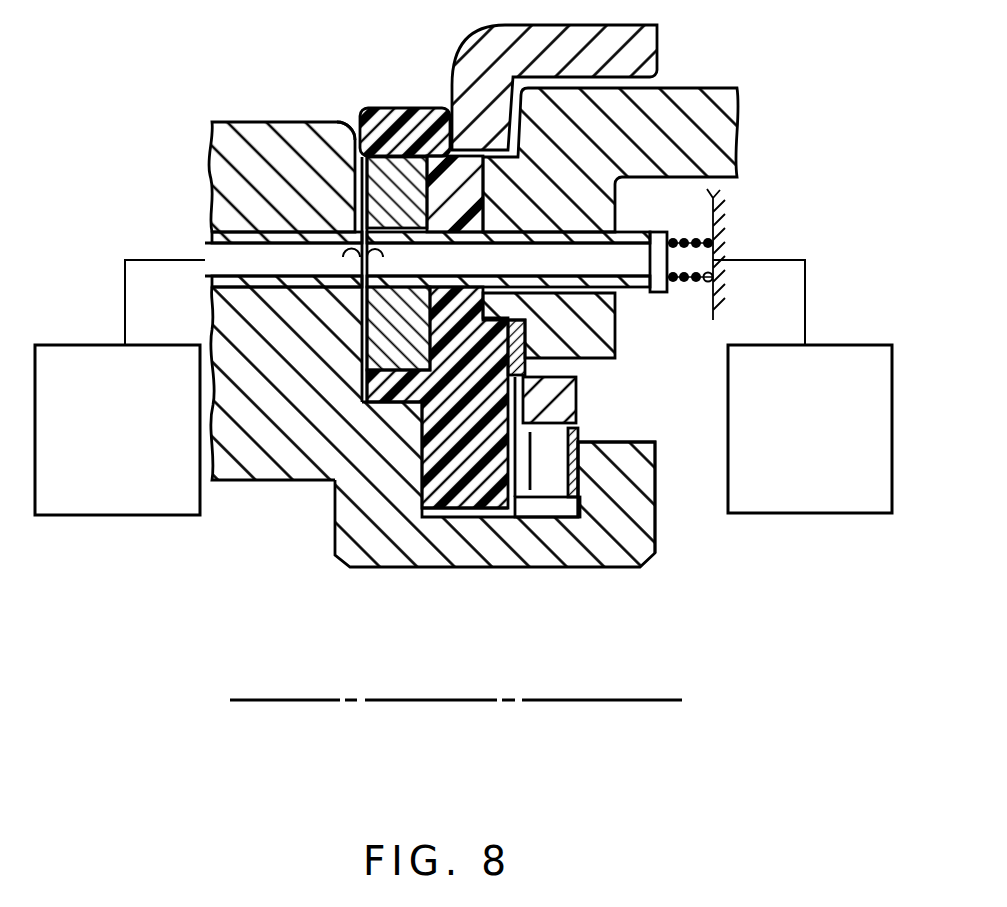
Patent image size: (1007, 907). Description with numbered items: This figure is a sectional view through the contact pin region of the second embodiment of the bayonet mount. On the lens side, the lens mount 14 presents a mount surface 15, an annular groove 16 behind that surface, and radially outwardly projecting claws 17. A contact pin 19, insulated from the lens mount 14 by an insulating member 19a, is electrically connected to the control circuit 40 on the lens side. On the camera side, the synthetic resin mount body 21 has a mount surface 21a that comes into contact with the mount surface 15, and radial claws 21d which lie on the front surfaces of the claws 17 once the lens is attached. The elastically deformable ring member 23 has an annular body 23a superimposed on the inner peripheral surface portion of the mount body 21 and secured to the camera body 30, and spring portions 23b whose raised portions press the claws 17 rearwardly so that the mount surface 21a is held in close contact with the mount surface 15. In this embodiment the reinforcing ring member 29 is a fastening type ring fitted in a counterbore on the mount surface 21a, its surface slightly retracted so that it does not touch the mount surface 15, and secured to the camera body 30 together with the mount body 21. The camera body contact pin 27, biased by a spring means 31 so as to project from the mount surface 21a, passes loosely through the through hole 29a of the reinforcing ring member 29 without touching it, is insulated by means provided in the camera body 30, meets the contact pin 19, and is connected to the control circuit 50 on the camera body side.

The lens mount 14 is at (572, 555).
The mount surface 15 is at (368, 350).
The annular groove 16 is at (541, 512).
The claws 17 is at (632, 492).
The contact pin 19 is at (220, 253).
The insulating member 19a is at (205, 245).
The mount body 21 is at (382, 112).
The mount surface 21a is at (352, 146).
The radial claws 21d is at (483, 505).
The elastically deformable ring member 23 is at (525, 346).
The annular body 23a is at (592, 347).
The spring portions 23b is at (580, 430).
The contact pin 27 is at (633, 258).
The reinforcing ring member 29 is at (414, 180).
The through hole 29a is at (355, 247).
The camera body 30 is at (695, 125).
The spring means 31 is at (712, 232).
The control circuit 40 is at (115, 515).
The control circuit 50 is at (812, 513).